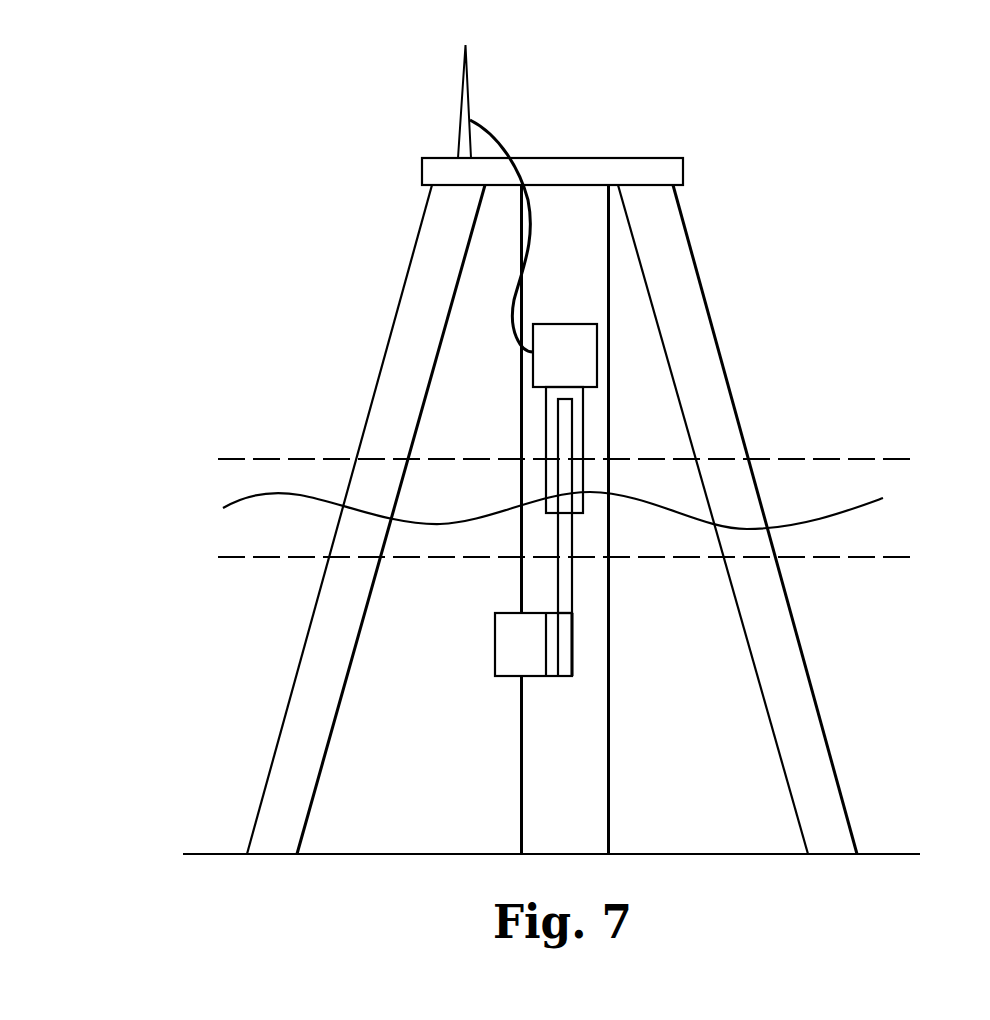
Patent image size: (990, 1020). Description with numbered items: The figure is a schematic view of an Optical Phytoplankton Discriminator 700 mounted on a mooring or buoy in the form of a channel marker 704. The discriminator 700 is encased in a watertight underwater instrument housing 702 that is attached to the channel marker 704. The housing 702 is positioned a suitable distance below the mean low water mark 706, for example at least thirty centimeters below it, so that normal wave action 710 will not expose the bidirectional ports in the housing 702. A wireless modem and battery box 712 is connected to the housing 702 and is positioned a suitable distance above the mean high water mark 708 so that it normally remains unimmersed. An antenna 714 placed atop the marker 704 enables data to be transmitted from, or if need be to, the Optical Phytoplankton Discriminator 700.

The Optical Phytoplankton Discriminator 700 is at (732, 143).
The watertight underwater instrument housing 702 is at (495, 643).
The channel marker 704 is at (715, 421).
The mean low water mark 706 is at (233, 560).
The mean high water mark 708 is at (270, 459).
The normal wave action 710 is at (252, 497).
The wireless modem and battery box 712 is at (575, 355).
The antenna 714 is at (468, 104).